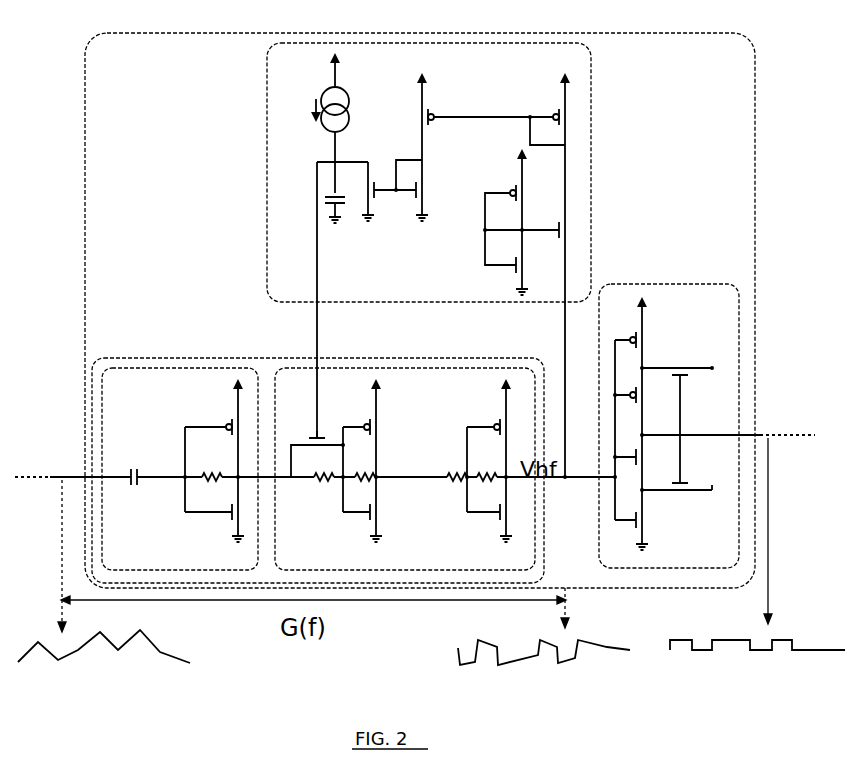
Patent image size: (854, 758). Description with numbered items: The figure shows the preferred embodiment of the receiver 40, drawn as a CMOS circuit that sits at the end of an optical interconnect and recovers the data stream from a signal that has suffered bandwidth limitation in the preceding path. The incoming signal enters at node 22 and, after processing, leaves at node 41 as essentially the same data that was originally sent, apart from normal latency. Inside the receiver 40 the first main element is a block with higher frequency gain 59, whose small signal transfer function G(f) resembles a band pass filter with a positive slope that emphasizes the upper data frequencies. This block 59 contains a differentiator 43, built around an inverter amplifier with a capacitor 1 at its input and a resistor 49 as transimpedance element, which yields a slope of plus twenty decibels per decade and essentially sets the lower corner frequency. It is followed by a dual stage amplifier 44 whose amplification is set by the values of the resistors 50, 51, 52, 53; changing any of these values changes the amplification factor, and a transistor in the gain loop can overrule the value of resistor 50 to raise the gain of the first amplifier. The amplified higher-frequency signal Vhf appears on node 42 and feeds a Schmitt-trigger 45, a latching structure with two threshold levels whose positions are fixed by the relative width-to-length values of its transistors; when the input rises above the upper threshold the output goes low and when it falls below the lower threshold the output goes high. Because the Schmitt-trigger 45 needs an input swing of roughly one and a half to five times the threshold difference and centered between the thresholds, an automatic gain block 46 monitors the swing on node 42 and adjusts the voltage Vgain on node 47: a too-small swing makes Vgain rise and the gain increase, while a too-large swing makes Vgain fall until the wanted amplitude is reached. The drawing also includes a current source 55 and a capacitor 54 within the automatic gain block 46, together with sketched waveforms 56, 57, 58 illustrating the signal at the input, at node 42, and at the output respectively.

The input capacitor 1 is at (139, 470).
The node 22 is at (98, 477).
The receiver 40 is at (86, 168).
The node 41 is at (705, 436).
The node 42 is at (592, 479).
The differentiator 43 is at (150, 367).
The dual stage amplifier 44 is at (376, 367).
The Schmitt-trigger 45 is at (656, 285).
The automatic gain block 46 is at (267, 195).
The node 47 is at (320, 322).
The resistor 49 is at (212, 471).
The resistor 50 is at (325, 485).
The resistor 51 is at (359, 471).
The resistor 52 is at (452, 471).
The resistor 53 is at (486, 471).
The capacitor 54 is at (346, 206).
The current source 55 is at (314, 104).
The input signal waveform 56 is at (168, 652).
The high-frequency signal waveform 57 is at (606, 643).
The output signal waveform 58 is at (805, 647).
The higher frequency gain block 59 is at (190, 358).